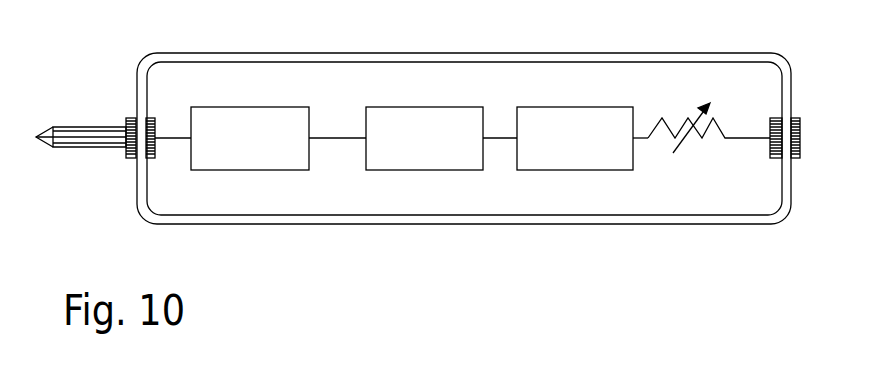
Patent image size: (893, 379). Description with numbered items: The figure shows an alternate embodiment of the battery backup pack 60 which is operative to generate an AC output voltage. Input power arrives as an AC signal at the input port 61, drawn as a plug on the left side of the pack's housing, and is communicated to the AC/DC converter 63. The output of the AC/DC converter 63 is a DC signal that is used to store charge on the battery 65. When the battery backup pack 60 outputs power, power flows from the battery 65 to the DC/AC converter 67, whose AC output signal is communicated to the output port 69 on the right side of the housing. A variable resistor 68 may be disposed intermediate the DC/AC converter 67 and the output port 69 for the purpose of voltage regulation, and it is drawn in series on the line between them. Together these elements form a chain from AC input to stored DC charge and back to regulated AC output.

The battery backup pack 60 is at (518, 42).
The input port 61 is at (122, 151).
The AC/DC converter 63 is at (242, 170).
The battery 65 is at (425, 170).
The DC/AC converter 67 is at (567, 170).
The variable resistor 68 is at (683, 128).
The output port 69 is at (794, 118).